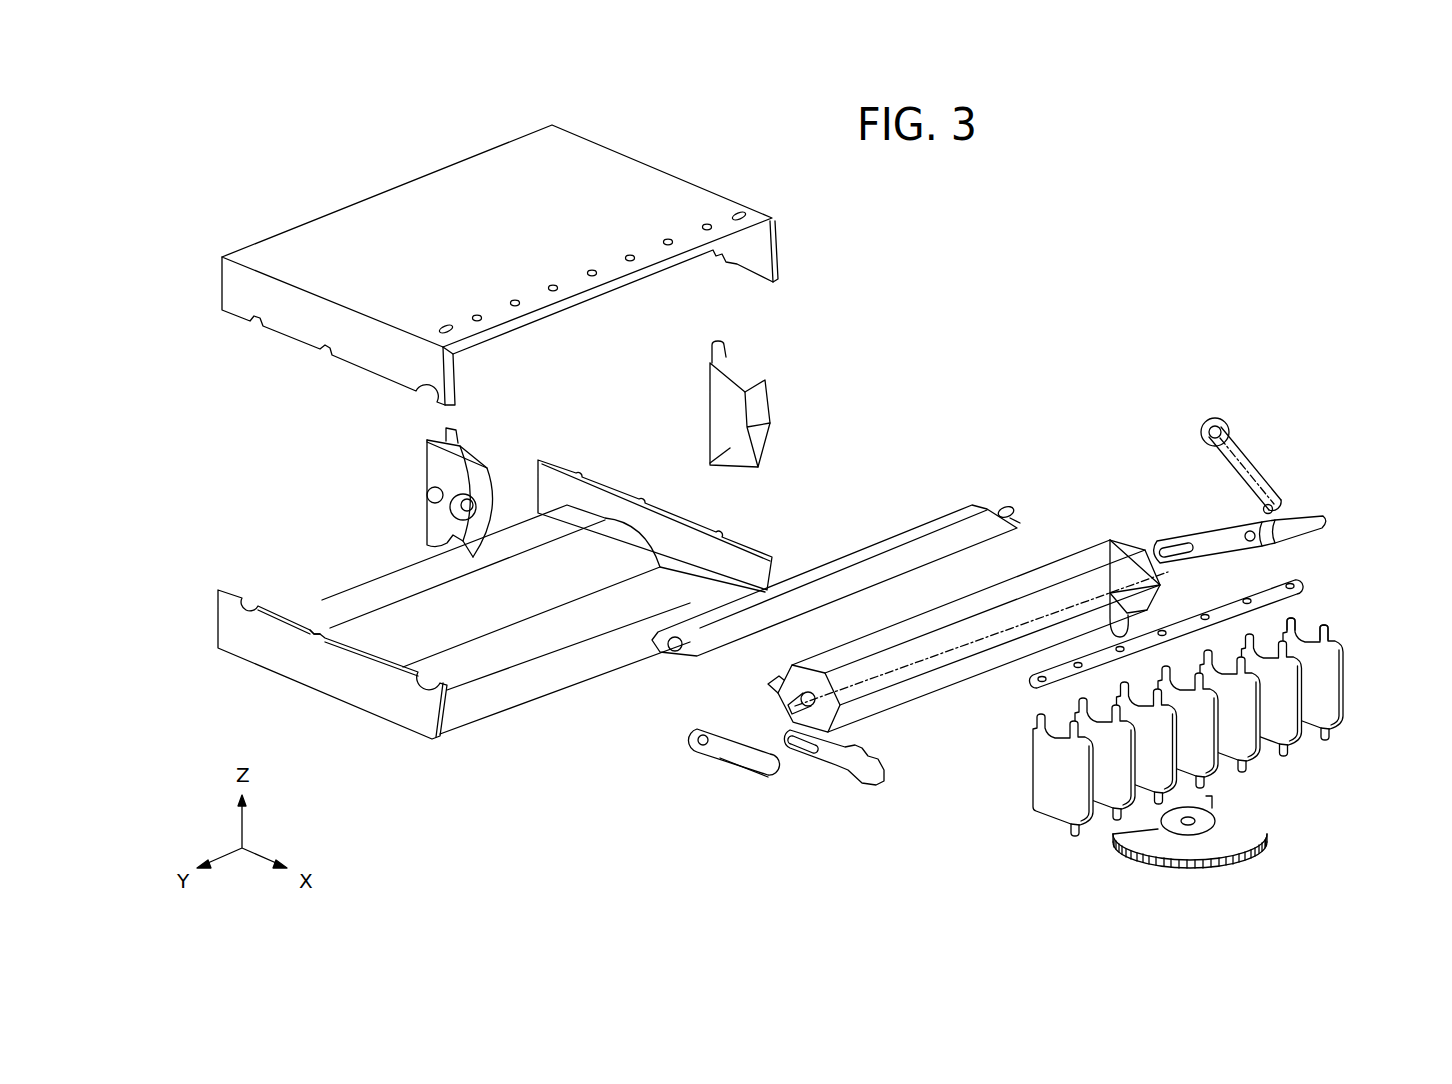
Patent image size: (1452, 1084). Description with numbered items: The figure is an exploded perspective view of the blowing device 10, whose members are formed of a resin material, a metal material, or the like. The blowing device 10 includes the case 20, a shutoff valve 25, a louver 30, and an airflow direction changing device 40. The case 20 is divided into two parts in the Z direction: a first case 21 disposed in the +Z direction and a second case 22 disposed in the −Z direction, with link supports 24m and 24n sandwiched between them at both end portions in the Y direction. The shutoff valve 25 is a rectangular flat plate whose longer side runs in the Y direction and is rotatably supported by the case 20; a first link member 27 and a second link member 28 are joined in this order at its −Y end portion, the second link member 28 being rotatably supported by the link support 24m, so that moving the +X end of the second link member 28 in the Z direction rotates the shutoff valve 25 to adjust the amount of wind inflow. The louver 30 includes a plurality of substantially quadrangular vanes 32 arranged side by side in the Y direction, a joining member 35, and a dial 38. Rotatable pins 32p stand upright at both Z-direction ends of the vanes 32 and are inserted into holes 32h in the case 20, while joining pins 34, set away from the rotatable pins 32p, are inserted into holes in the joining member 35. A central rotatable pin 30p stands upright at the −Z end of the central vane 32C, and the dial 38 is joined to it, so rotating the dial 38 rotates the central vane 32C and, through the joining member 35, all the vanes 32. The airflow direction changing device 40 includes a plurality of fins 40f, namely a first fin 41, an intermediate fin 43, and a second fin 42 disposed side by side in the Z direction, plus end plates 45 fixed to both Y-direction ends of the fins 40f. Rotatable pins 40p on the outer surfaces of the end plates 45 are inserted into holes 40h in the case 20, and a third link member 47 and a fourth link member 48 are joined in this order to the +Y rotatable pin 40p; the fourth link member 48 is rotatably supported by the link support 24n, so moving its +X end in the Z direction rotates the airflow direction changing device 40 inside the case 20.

The blowing device 10 is at (973, 314).
The case 20 is at (143, 273).
The first case 21 is at (222, 294).
The second case 22 is at (216, 620).
The link support 24n is at (440, 467).
The link support 24m is at (737, 363).
The shutoff valve 25 is at (903, 545).
The first link member 27 is at (1264, 462).
The second link member 28 is at (1318, 518).
The louver 30 is at (1348, 662).
The central rotatable pin 30p is at (1206, 784).
The vane 32 is at (1330, 688).
The rotatable pin 32p is at (1332, 620).
The central vane 32C is at (1200, 737).
The hole 32h is at (710, 222).
The joining pin 34 is at (1294, 612).
The joining member 35 is at (1300, 577).
The dial 38 is at (1262, 846).
The airflow direction changing device 40 is at (952, 697).
The fins 40f is at (1135, 413).
The hole 40h is at (316, 636).
The rotatable pin 40p is at (788, 704).
The first fin 41 is at (1050, 556).
The second fin 42 is at (1124, 625).
The intermediate fin 43 is at (1072, 598).
The end plate 45 is at (793, 676).
The third link member 47 is at (716, 758).
The fourth link member 48 is at (828, 768).